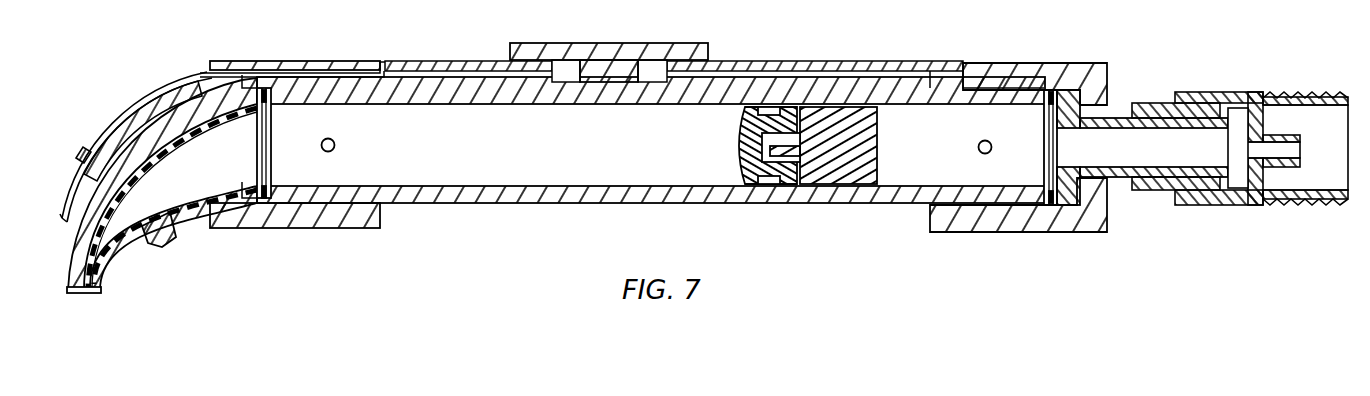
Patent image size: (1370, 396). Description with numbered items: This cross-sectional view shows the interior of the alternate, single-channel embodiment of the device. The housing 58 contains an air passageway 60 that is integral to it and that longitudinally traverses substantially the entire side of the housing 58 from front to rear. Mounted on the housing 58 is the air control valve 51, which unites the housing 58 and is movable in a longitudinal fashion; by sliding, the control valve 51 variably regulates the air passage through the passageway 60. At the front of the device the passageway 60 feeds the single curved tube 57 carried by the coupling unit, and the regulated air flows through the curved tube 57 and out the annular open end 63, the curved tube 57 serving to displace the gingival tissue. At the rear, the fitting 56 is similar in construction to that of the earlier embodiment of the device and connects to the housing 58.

The air control valve 51 is at (602, 45).
The fitting 56 is at (1220, 205).
The curved tube 57 is at (160, 85).
The housing 58 is at (828, 62).
The air passageway 60 is at (495, 77).
The annular open end 63 is at (62, 218).